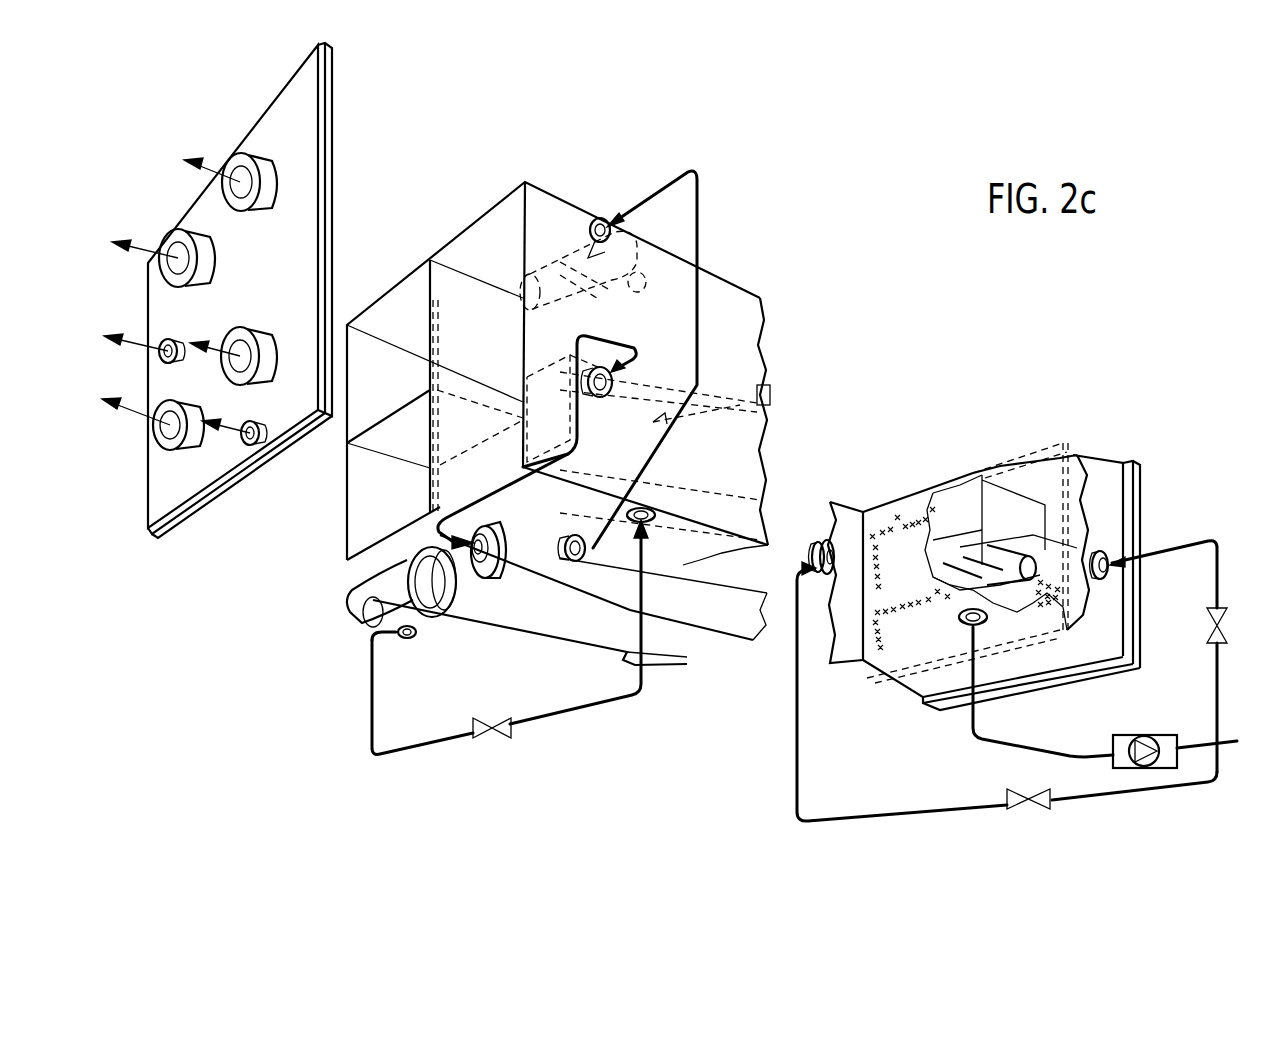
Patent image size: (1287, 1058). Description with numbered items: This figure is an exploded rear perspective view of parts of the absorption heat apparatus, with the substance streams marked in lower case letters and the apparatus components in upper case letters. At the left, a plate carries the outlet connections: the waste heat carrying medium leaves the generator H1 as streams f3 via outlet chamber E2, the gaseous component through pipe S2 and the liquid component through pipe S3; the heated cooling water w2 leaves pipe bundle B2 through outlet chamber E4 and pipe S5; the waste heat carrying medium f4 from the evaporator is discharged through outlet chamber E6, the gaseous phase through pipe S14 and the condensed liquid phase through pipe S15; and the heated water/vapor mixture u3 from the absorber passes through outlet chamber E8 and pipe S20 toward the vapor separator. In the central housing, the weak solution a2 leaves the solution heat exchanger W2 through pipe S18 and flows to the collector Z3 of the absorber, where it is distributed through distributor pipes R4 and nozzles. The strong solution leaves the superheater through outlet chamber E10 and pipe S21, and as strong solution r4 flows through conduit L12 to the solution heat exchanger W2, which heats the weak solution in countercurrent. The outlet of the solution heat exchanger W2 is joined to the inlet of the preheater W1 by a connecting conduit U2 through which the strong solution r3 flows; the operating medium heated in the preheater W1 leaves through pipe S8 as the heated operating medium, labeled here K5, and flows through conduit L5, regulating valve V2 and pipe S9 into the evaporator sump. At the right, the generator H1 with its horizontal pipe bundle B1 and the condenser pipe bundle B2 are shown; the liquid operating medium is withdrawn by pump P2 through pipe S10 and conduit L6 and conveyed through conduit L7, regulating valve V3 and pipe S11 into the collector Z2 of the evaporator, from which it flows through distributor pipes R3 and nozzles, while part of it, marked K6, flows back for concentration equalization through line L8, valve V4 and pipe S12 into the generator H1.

The heated water/vapor mixture u3 is at (192, 160).
The pipe S20 is at (273, 180).
The waste heat carrying medium streams f3 is at (128, 245).
The pipe S2 is at (213, 258).
The pipe S3 is at (168, 346).
The pipe S14 is at (273, 356).
The waste heat carrying medium f4 is at (217, 425).
The cooling water stream w2 is at (118, 392).
The pipe S5 is at (180, 440).
The pipe S15 is at (247, 442).
The outlet chamber E8 is at (470, 317).
The outlet chamber E2 is at (358, 383).
The outlet chamber E4 is at (359, 501).
The outlet chamber E6 is at (464, 475).
The outlet chamber E10 is at (525, 380).
The collector Z3 is at (555, 260).
The distributor pipes R4 is at (645, 285).
The strong solution r4 is at (636, 362).
The pipe S21 is at (597, 398).
The conduit L12 is at (520, 470).
The pipe S9 is at (652, 515).
The pipe S18 is at (556, 558).
The weak solution a2 is at (597, 551).
The strong solution r3 is at (388, 574).
The connecting conduit U2 is at (362, 605).
The coupling K5 is at (395, 638).
The pipe S8 is at (410, 640).
The preheater W1 is at (520, 640).
The solution heat exchanger W2 is at (718, 635).
The conduit L5 is at (410, 754).
The regulating valve V2 is at (494, 740).
The pipe S12 is at (820, 540).
The generator H1 is at (897, 492).
The distributor pipes R3 is at (945, 560).
The collector Z2 is at (1012, 560).
The pipe S11 is at (1101, 552).
The pipe bundle B1 is at (892, 579).
The pipe bundle B2 is at (901, 639).
The pipe S10 is at (968, 623).
The regulating valve V3 is at (1230, 626).
The conduit L7 is at (1217, 686).
The conduit L6 is at (1035, 750).
The pump P2 is at (1163, 735).
The coupling K6 is at (1237, 741).
The valve V4 is at (1018, 790).
The line L8 is at (1188, 795).